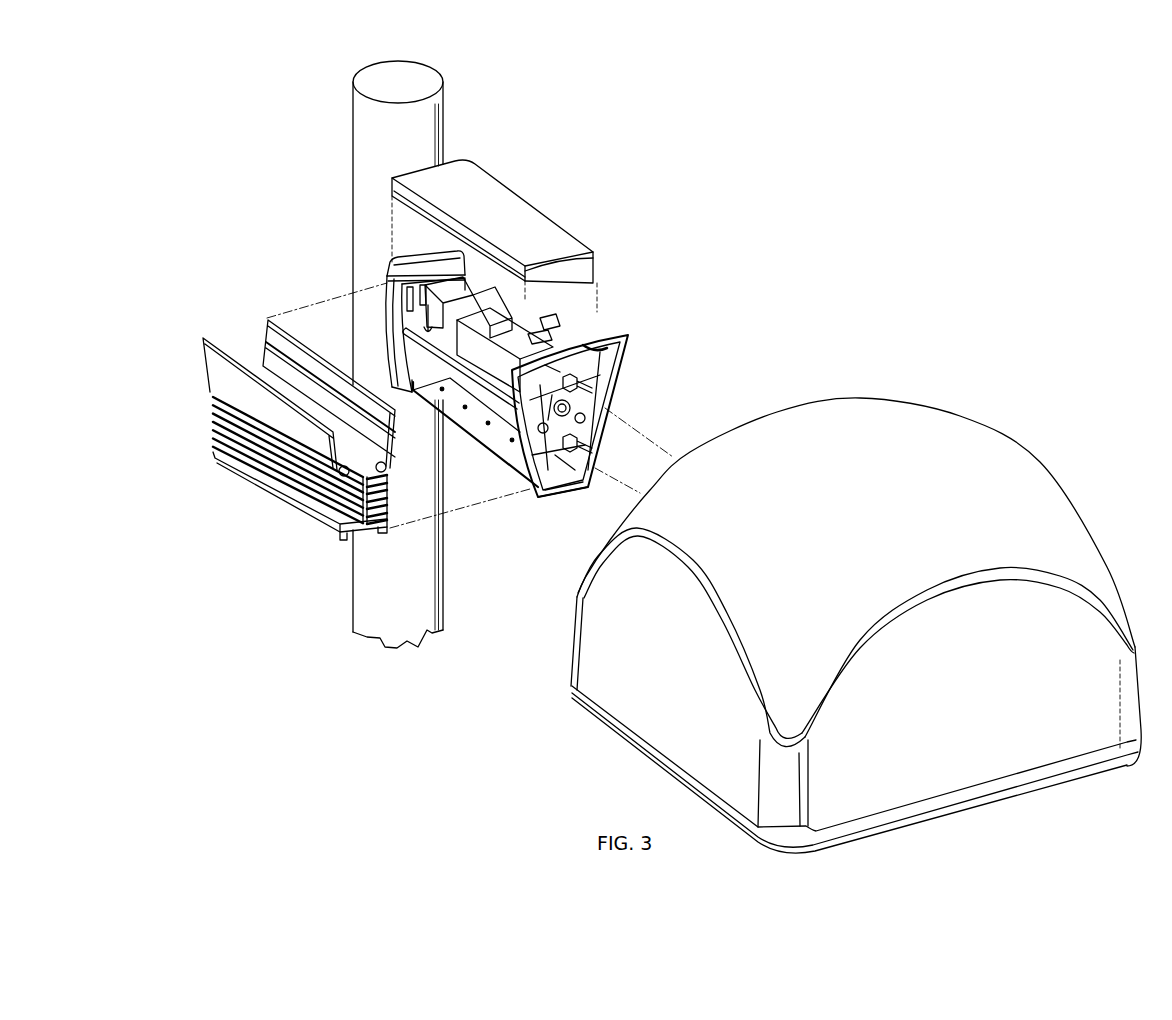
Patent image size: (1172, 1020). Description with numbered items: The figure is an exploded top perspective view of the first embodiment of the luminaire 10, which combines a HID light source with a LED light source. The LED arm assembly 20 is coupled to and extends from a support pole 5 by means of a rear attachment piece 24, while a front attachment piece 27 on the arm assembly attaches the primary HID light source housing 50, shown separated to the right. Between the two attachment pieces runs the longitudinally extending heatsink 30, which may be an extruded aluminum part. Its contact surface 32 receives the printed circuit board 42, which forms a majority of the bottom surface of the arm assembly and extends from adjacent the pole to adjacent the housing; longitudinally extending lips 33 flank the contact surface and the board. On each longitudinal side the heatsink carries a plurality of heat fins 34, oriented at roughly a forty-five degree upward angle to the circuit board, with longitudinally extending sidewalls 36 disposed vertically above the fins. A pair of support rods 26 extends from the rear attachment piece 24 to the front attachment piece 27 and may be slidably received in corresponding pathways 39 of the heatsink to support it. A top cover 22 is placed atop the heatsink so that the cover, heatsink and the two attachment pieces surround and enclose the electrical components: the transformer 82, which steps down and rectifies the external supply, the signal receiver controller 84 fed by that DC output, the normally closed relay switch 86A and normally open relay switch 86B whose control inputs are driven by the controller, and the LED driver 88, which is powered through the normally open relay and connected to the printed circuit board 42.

The support pole 5 is at (365, 157).
The luminaire 10 is at (845, 174).
The LED arm assembly 20 is at (610, 184).
The top cover 22 is at (518, 207).
The rear attachment piece 24 is at (396, 262).
The support rods 26 is at (508, 400).
The front attachment piece 27 is at (628, 373).
The heatsink 30 is at (180, 392).
The contact surface 32 is at (363, 533).
The lips 33 is at (340, 537).
The heat fins 34 is at (213, 418).
The sidewalls 36 is at (210, 368).
The pathways 39 is at (388, 460).
The printed circuit board 42 is at (510, 450).
The primary HID light source housing 50 is at (956, 390).
The transformer 82 is at (467, 277).
The signal receiver controller 84 is at (499, 307).
The normally closed relay switch 86A is at (545, 338).
The normally open relay switch 86B is at (607, 348).
The LED driver 88 is at (557, 323).